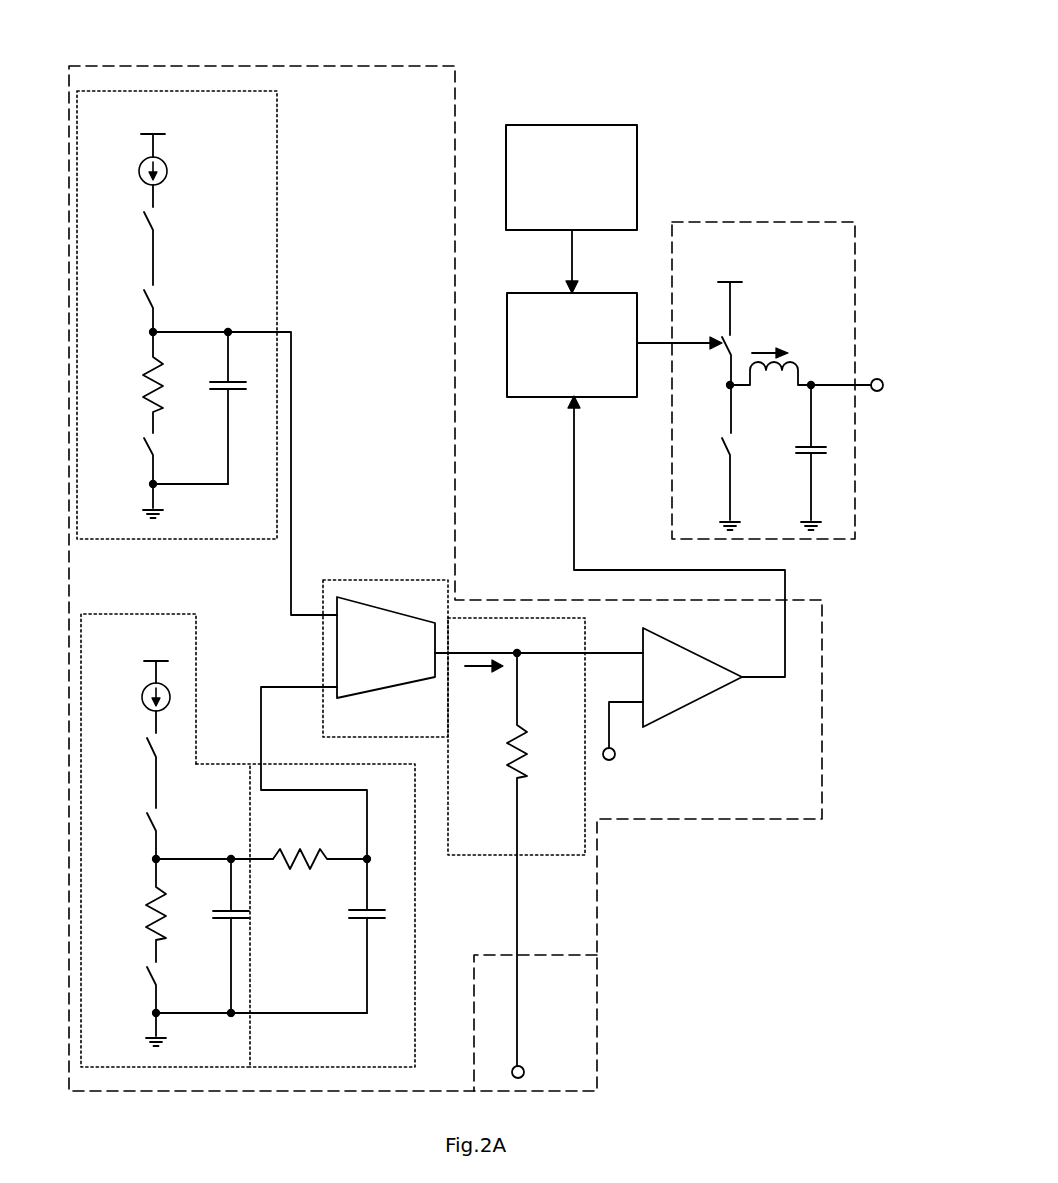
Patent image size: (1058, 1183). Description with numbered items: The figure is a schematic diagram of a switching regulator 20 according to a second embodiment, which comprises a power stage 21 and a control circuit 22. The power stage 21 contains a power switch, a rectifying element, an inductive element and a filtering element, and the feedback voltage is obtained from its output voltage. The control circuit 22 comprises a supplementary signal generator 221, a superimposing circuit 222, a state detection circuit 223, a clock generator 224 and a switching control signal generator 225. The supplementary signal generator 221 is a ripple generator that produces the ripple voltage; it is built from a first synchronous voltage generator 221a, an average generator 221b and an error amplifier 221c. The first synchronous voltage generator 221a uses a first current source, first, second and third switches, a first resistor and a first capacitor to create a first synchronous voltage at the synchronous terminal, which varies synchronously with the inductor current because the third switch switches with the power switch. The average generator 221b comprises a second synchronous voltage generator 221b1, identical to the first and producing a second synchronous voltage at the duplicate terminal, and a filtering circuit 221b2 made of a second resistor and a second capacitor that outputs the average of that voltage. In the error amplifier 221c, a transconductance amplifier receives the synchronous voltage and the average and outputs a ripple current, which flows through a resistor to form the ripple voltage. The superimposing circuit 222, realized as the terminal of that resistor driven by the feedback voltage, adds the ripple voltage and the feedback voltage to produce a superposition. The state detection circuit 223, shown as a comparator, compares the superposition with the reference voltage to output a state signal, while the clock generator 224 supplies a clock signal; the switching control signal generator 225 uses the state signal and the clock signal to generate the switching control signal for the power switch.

The switching regulator 20 is at (486, 551).
The power stage 21 is at (793, 222).
The control circuit 22 is at (505, 79).
The supplementary signal generator 221 is at (360, 572).
The first synchronous voltage generator 221a is at (207, 353).
The average generator 221b is at (413, 907).
The second synchronous voltage generator 221b1 is at (224, 840).
The filtering circuit 221b2 is at (305, 860).
The error amplifier 221c is at (358, 580).
The superimposing circuit 222 is at (539, 1023).
The state detection circuit 223 is at (671, 605).
The clock generator 224 is at (571, 209).
The switching control signal generator 225 is at (614, 345).